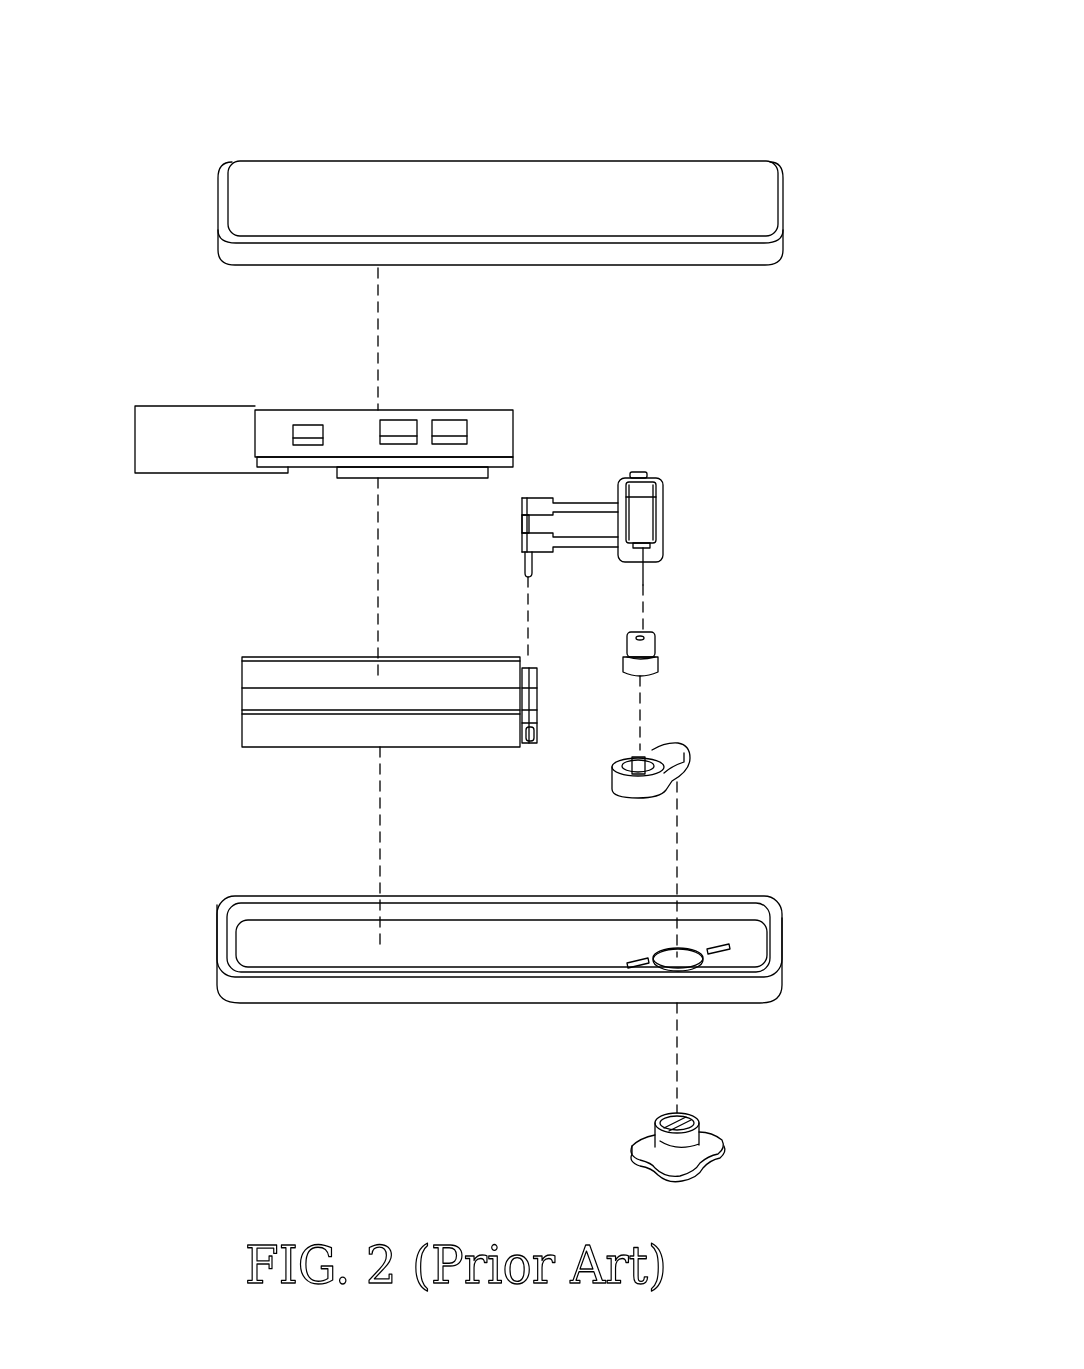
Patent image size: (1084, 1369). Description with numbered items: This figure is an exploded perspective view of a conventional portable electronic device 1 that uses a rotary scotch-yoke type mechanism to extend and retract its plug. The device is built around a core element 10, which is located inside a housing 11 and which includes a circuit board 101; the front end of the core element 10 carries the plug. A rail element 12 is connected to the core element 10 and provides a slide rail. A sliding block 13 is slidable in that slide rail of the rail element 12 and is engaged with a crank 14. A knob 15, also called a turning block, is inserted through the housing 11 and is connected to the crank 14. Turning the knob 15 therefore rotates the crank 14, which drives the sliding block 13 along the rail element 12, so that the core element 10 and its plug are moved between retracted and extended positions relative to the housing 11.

The portable electronic device 1 is at (814, 80).
The core element 10 is at (208, 752).
The circuit board 101 is at (258, 390).
The housing 11 is at (517, 182).
The rail element 12 is at (692, 470).
The sliding block 13 is at (645, 653).
The crank 14 is at (674, 753).
The knob 15 is at (718, 1152).